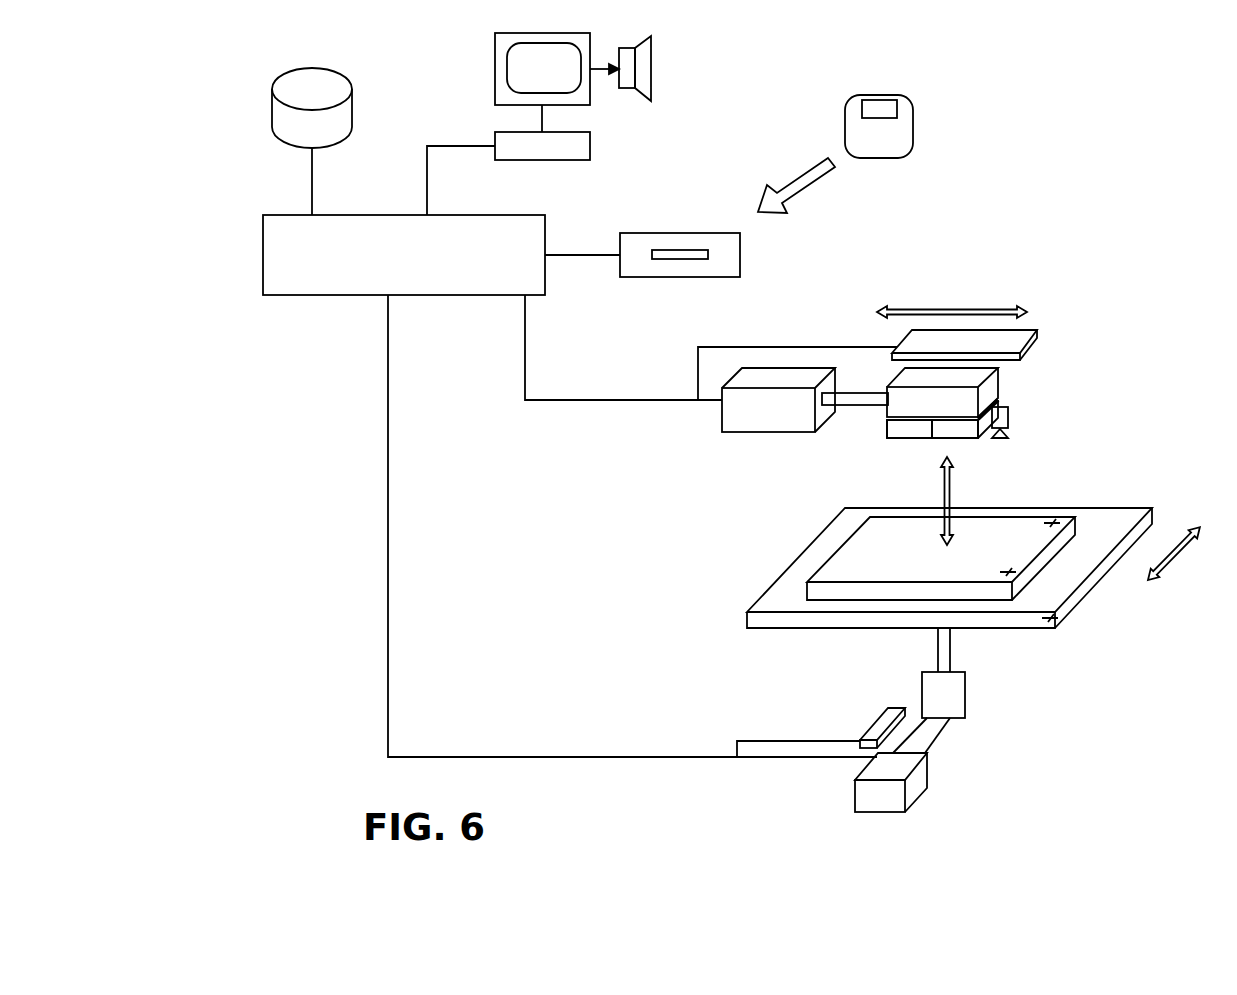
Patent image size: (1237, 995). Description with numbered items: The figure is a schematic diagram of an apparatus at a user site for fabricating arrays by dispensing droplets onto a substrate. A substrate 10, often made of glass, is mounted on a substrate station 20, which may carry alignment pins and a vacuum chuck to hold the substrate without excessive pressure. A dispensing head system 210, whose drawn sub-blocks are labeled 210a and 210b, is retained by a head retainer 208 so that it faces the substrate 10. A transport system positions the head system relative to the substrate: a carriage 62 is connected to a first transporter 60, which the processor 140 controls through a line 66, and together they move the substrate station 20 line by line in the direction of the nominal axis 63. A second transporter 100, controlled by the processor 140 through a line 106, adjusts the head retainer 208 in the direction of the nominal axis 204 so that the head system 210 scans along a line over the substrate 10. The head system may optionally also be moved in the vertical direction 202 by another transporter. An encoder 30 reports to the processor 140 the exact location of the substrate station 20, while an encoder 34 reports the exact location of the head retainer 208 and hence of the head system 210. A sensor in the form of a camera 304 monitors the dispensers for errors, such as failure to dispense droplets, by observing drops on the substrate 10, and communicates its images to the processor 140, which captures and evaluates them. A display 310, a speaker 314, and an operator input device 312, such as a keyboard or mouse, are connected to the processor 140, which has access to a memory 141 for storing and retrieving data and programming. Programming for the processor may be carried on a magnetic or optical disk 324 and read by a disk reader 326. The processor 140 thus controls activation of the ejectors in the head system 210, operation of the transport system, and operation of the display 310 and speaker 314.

The substrate 10 is at (885, 528).
The substrate station 20 is at (797, 560).
The encoder 30 is at (873, 712).
The encoder 34 is at (1040, 343).
The first transporter 60 is at (912, 802).
The carriage 62 is at (943, 742).
The nominal axis 63 is at (1176, 557).
The line 66 is at (388, 447).
The second transporter 100 is at (722, 418).
The line 106 is at (627, 398).
The processor 140 is at (372, 261).
The memory 141 is at (278, 143).
The vertical direction 202 is at (952, 490).
The nominal axis 204 is at (948, 307).
The head retainer 208 is at (998, 388).
The dispensing head system 210 is at (887, 428).
The first nozzle 210a is at (905, 430).
The second nozzle 210b is at (958, 433).
The camera 304 is at (1008, 418).
The display 310 is at (495, 67).
The operator input device 312 is at (590, 146).
The speaker 314 is at (651, 58).
The magnetic or optical disk 324 is at (893, 95).
The disk reader 326 is at (720, 233).